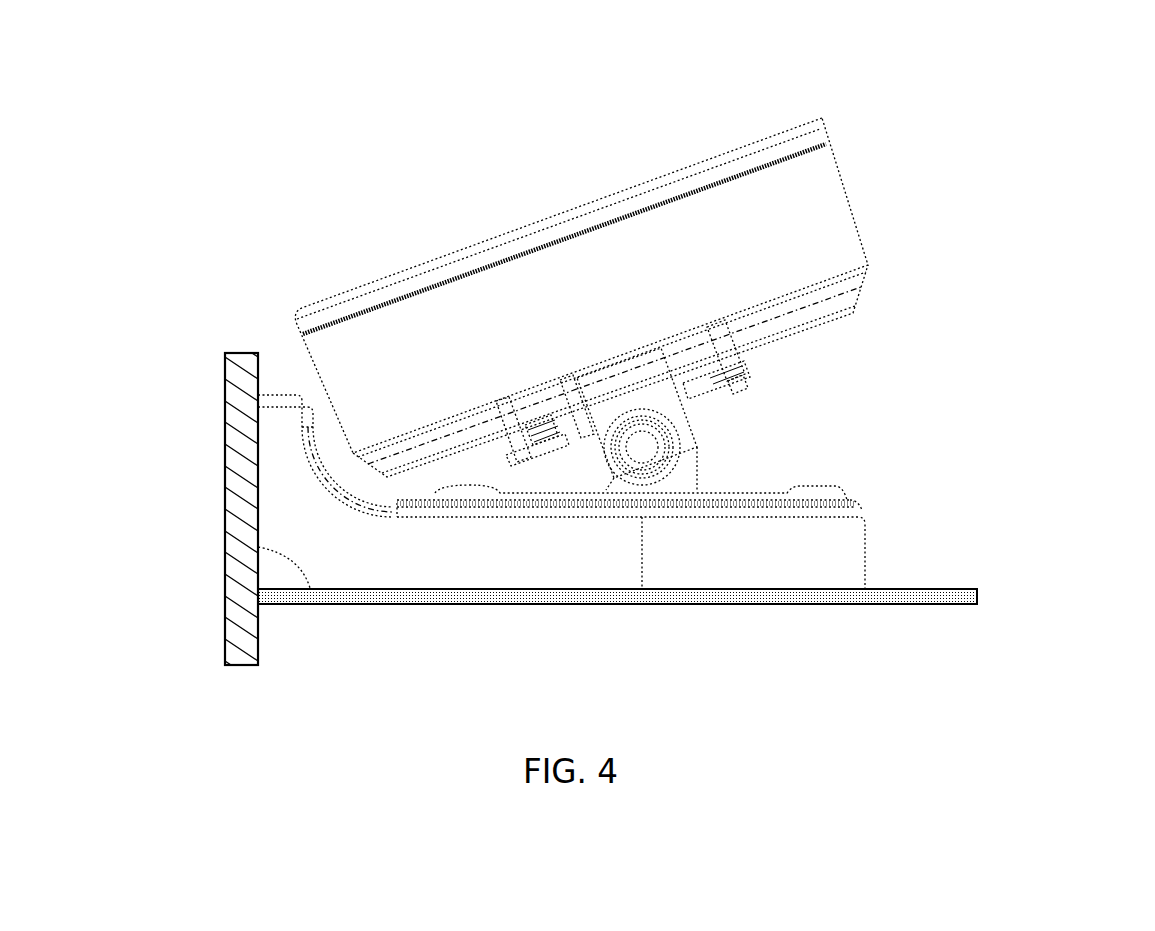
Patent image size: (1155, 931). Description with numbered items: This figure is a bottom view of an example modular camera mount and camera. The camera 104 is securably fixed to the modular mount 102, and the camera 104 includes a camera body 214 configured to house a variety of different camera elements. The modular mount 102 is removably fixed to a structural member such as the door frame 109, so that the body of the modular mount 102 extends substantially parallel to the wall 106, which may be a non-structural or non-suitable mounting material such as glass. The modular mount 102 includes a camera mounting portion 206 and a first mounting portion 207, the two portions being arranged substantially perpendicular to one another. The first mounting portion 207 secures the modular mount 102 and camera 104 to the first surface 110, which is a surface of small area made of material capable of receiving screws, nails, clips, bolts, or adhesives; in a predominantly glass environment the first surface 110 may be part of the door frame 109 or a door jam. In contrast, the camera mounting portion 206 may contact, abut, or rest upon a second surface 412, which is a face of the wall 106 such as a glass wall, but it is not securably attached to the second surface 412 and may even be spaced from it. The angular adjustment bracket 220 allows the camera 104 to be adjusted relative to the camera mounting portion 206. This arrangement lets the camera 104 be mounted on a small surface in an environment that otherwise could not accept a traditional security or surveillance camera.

The modular mount 102 is at (905, 548).
The camera 104 is at (717, 270).
The wall 106 is at (945, 607).
The door frame 109 is at (243, 352).
The first surface 110 is at (262, 575).
The first mounting portion 207 is at (262, 521).
The camera mounting portion 206 is at (757, 490).
The camera body 214 is at (617, 285).
The angular adjustment bracket 220 is at (682, 476).
The second surface 412 is at (923, 588).